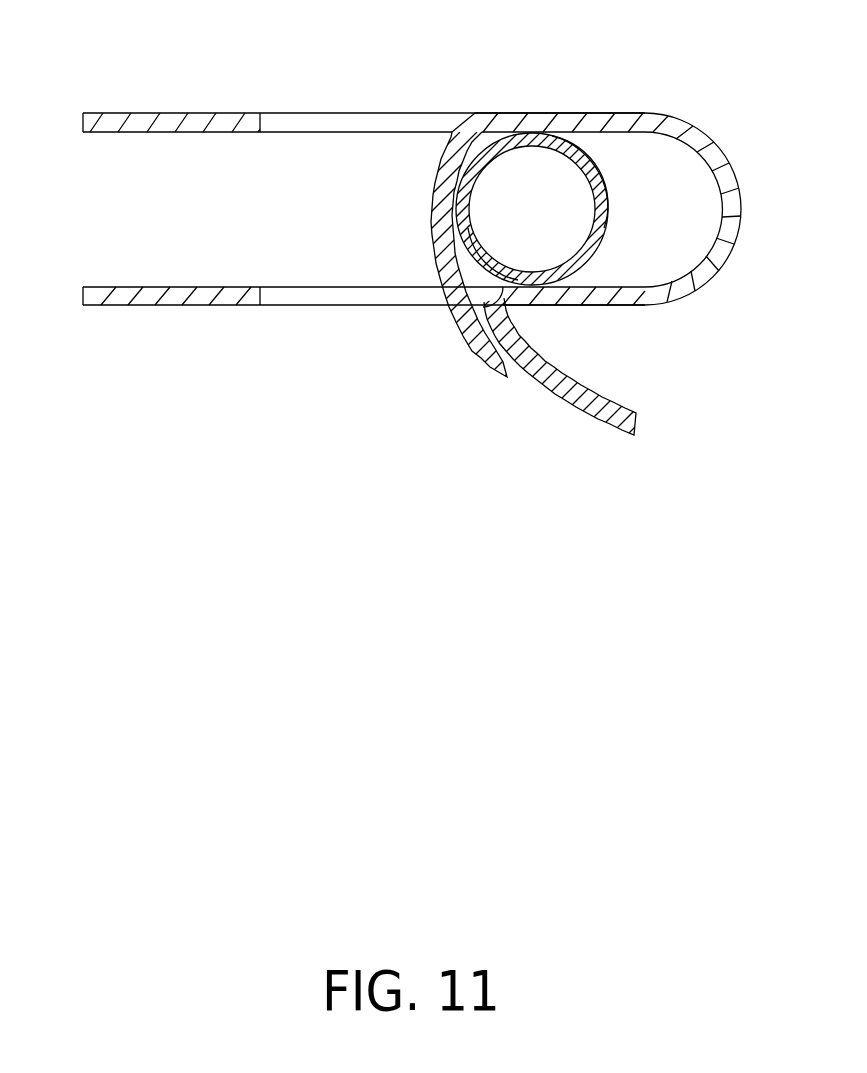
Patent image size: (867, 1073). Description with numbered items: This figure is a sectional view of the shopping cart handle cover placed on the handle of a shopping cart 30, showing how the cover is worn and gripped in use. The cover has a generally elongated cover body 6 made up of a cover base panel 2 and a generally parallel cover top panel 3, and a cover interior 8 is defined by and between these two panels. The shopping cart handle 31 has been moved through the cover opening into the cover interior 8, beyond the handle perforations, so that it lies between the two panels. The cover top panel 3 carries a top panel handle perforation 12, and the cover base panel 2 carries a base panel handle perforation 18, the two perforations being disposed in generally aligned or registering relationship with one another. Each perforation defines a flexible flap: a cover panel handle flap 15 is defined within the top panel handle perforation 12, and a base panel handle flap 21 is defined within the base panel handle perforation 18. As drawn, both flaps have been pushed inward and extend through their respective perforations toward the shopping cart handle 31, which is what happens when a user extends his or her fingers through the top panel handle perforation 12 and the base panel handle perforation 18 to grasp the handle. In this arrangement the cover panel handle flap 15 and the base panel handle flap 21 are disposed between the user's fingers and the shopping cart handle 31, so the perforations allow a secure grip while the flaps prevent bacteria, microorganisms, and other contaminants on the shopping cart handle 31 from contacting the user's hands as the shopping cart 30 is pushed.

The cover body 6 is at (356, 205).
The cover top panel 3 is at (170, 113).
The cover base panel 2 is at (167, 305).
The top panel handle perforation 12 is at (296, 116).
The base panel handle perforation 18 is at (294, 295).
The cover panel handle flap 15 is at (431, 202).
The base panel handle flap 21 is at (554, 393).
The cover interior 8 is at (675, 253).
The shopping cart 30 is at (537, 174).
The shopping cart handle 31 is at (596, 162).